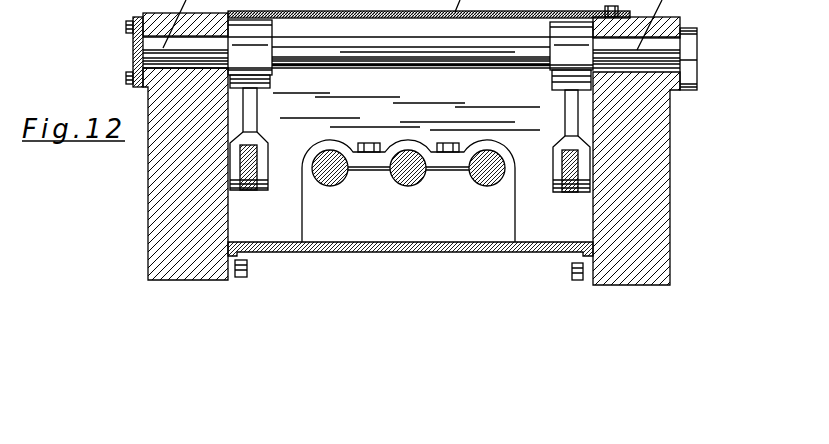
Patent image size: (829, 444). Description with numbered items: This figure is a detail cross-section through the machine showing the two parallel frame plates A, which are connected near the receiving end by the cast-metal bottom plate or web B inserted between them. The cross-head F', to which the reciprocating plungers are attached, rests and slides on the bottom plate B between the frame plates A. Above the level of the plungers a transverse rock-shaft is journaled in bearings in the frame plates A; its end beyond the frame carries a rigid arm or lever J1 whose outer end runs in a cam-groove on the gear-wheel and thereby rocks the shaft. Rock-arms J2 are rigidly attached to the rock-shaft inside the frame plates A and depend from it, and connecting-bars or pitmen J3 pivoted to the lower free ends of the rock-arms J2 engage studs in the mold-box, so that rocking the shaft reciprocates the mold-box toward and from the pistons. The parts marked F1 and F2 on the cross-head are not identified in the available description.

The frame plates A is at (148, 259).
The bottom plate B is at (338, 253).
The arm or lever J1 is at (690, 92).
The rock-arms J2 is at (253, 127).
The connecting-bars J3 is at (247, 190).
The cross-head F' is at (408, 180).
The bearing block F1 is at (428, 225).
The bosses on bearing block F2 is at (417, 143).